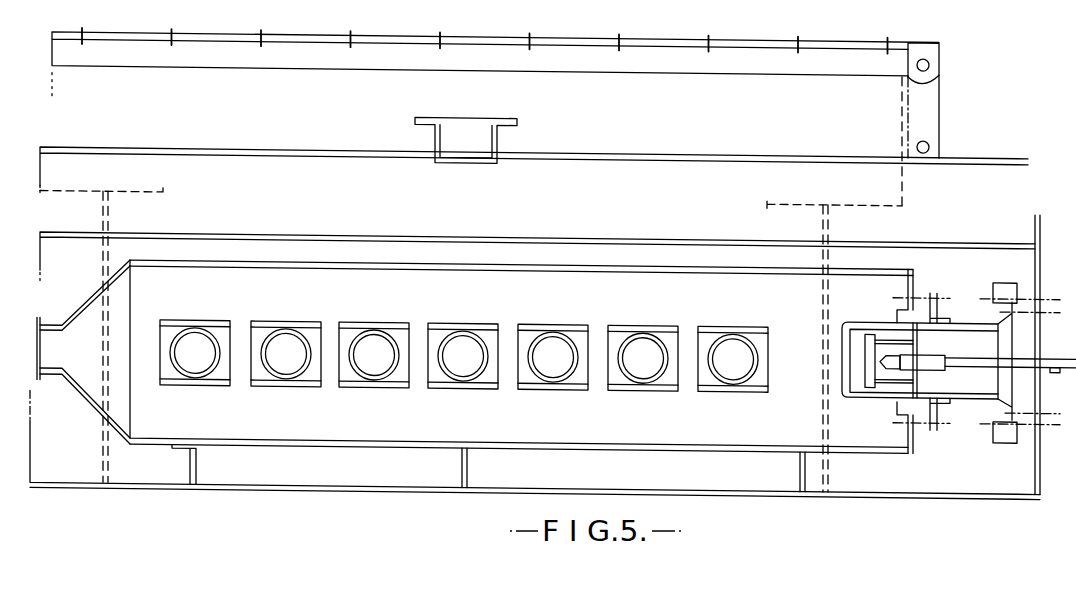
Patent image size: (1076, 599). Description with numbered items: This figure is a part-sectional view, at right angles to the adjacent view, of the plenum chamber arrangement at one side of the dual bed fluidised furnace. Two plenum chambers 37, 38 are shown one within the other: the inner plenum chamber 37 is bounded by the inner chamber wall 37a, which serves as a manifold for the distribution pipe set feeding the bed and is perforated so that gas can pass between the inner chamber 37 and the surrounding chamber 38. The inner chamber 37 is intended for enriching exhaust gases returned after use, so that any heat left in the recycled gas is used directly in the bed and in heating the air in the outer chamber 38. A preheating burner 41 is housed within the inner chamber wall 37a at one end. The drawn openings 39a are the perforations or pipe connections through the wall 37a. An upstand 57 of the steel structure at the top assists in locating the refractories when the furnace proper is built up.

The plenum chamber 38 is at (691, 200).
The upstand 57 is at (938, 60).
The plenum chamber 37 is at (678, 296).
The inner chamber wall 37a is at (745, 263).
The hole plates 39a is at (373, 328).
The preheating burner 41 is at (963, 312).